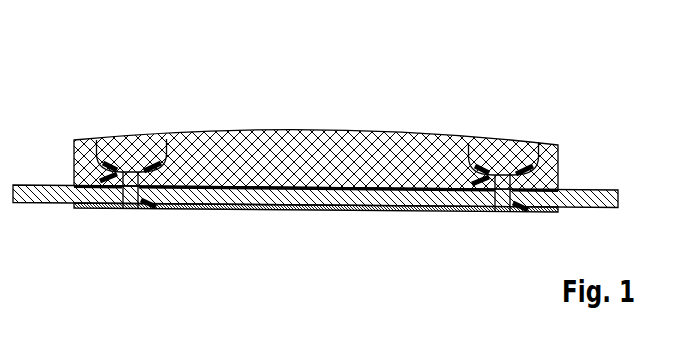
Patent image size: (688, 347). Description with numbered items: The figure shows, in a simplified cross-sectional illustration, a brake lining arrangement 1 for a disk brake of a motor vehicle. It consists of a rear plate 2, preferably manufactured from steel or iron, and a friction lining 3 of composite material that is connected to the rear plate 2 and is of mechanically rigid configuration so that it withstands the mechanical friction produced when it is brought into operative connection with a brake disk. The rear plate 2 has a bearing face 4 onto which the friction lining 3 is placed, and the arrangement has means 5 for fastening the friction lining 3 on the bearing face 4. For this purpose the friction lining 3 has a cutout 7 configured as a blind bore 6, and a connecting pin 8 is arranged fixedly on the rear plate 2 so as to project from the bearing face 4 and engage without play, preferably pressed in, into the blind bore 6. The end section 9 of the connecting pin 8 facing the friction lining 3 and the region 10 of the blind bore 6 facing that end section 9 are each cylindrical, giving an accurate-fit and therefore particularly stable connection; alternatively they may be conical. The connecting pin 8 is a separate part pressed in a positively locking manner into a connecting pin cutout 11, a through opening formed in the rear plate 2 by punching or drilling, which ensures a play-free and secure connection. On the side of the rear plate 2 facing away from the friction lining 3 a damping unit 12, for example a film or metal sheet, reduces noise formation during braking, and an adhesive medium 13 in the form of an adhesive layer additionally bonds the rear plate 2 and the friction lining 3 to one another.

The brake lining arrangement 1 is at (366, 64).
The rear plate 2 is at (585, 197).
The friction lining 3 is at (293, 131).
The bearing face 4 is at (34, 185).
The means for fastening 5 is at (315, 219).
The blind bore 6 is at (290, 130).
The cutout 7 is at (96, 150).
The connecting pin 8 is at (130, 208).
The end section 9 is at (98, 203).
The region of the blind bore 10 is at (163, 145).
The connecting pin cutout 11 is at (153, 209).
The damping unit 12 is at (222, 212).
The adhesive medium 13 is at (325, 191).